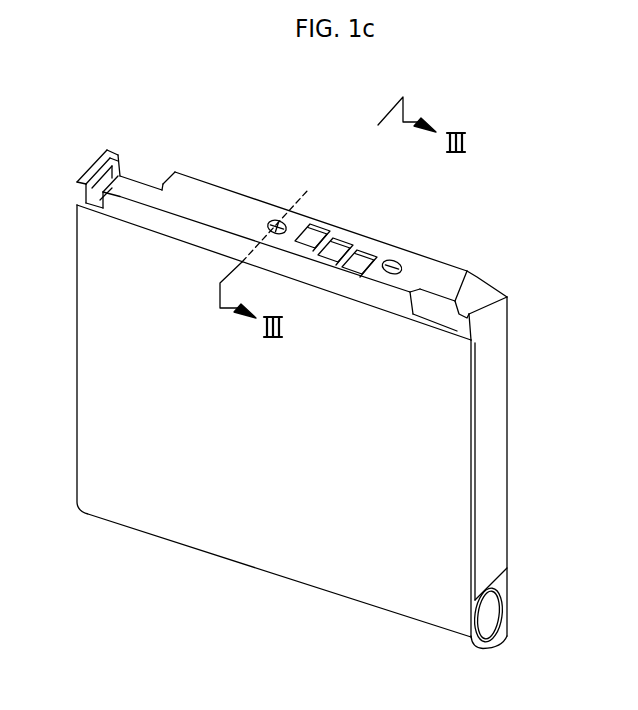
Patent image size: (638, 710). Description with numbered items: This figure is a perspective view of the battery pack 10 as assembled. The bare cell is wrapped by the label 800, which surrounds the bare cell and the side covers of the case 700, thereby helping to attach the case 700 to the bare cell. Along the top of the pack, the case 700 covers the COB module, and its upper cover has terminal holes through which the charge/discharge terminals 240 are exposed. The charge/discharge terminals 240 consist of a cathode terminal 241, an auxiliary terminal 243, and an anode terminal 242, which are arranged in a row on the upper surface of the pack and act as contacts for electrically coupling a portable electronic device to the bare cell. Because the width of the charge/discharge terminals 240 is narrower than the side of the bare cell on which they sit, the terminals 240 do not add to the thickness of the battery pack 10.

The battery pack 10 is at (228, 110).
The charge/discharge terminals 240 is at (419, 185).
The cathode terminal 241 is at (314, 223).
The auxiliary terminal 243 is at (341, 237).
The anode terminal 242 is at (364, 247).
The case 700 is at (456, 263).
The label 800 is at (277, 552).